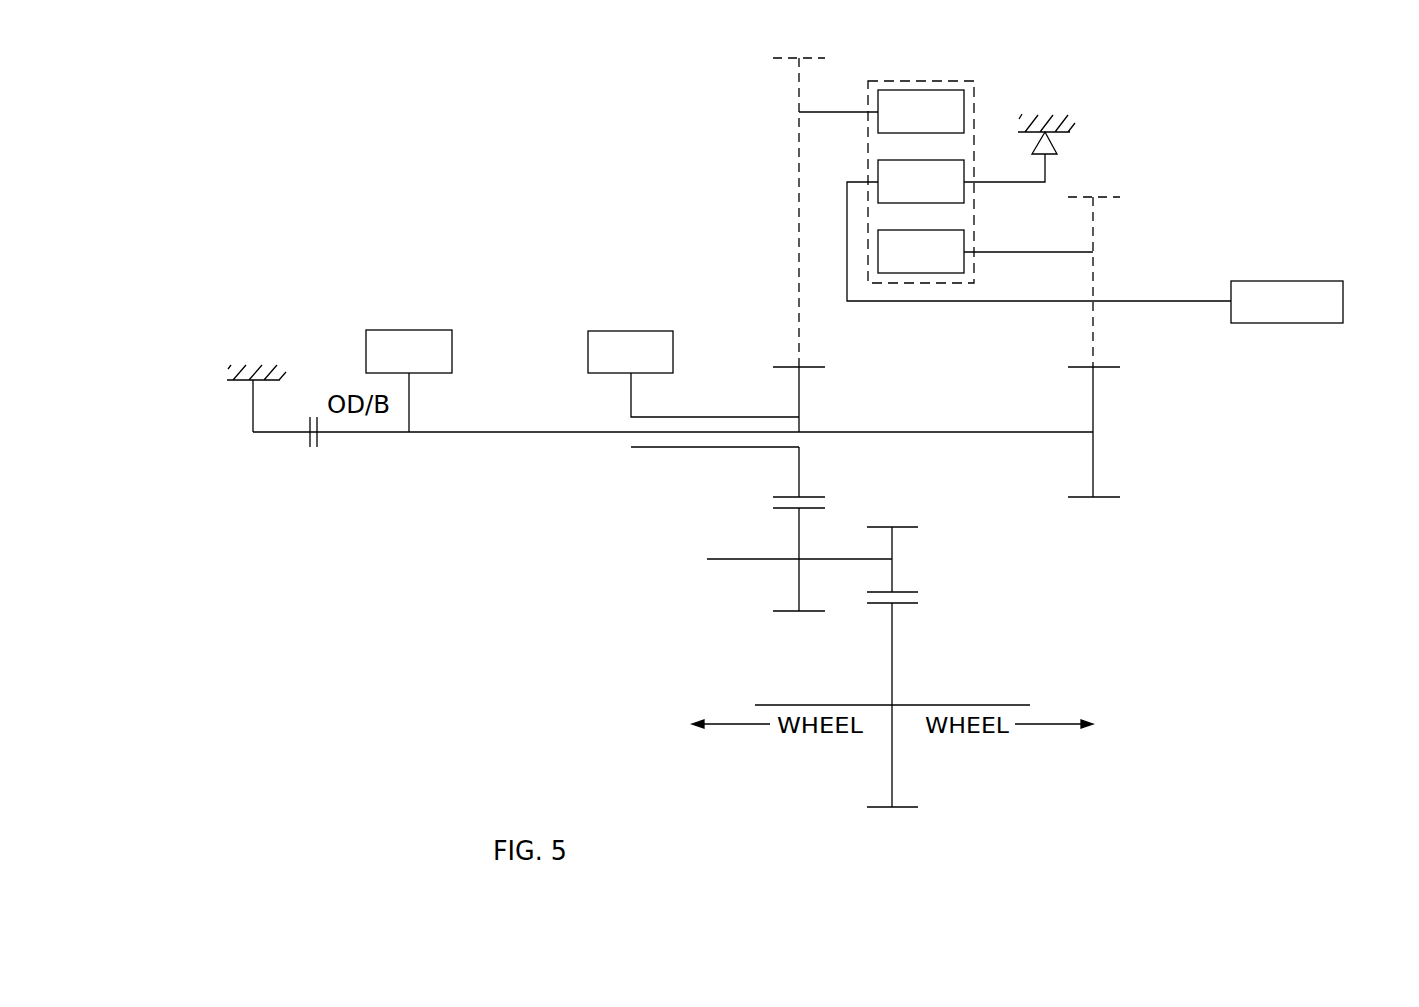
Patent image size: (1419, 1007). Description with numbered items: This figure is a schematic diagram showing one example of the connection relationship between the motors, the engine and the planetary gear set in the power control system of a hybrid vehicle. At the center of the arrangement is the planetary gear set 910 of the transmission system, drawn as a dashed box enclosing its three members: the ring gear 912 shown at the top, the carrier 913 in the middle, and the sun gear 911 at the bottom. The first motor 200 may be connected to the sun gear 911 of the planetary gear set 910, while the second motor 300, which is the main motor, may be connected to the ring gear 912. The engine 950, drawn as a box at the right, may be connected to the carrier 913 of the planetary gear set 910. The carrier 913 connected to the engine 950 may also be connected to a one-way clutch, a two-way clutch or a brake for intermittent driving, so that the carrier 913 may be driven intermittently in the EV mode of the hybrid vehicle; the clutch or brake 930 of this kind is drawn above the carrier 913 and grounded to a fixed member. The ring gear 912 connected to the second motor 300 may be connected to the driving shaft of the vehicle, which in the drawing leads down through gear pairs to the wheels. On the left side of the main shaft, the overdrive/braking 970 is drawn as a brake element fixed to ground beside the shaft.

The first motor 200 is at (421, 330).
The second motor 300 is at (637, 330).
The planetary gear set 910 is at (916, 81).
The sun gear 911 is at (933, 273).
The ring gear 912 is at (964, 108).
The carrier 913 is at (964, 195).
The one-way clutch / brake 930 is at (1058, 146).
The engine 950 is at (1298, 281).
The overdrive/braking 970 is at (318, 437).